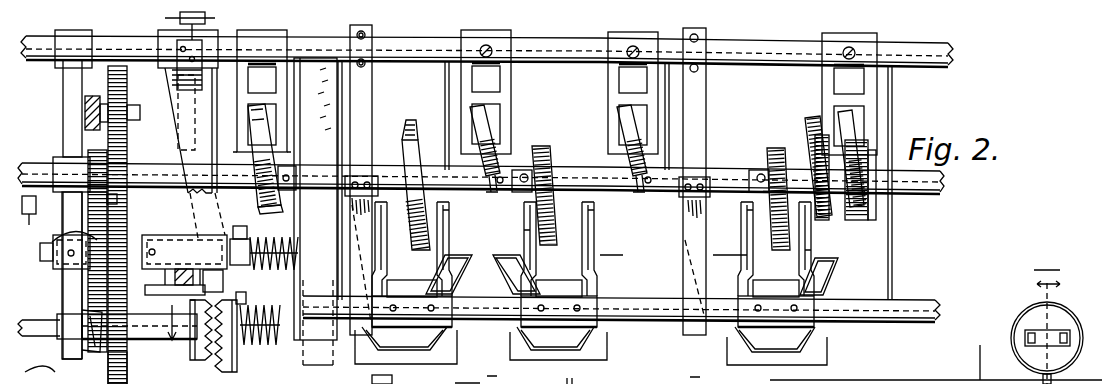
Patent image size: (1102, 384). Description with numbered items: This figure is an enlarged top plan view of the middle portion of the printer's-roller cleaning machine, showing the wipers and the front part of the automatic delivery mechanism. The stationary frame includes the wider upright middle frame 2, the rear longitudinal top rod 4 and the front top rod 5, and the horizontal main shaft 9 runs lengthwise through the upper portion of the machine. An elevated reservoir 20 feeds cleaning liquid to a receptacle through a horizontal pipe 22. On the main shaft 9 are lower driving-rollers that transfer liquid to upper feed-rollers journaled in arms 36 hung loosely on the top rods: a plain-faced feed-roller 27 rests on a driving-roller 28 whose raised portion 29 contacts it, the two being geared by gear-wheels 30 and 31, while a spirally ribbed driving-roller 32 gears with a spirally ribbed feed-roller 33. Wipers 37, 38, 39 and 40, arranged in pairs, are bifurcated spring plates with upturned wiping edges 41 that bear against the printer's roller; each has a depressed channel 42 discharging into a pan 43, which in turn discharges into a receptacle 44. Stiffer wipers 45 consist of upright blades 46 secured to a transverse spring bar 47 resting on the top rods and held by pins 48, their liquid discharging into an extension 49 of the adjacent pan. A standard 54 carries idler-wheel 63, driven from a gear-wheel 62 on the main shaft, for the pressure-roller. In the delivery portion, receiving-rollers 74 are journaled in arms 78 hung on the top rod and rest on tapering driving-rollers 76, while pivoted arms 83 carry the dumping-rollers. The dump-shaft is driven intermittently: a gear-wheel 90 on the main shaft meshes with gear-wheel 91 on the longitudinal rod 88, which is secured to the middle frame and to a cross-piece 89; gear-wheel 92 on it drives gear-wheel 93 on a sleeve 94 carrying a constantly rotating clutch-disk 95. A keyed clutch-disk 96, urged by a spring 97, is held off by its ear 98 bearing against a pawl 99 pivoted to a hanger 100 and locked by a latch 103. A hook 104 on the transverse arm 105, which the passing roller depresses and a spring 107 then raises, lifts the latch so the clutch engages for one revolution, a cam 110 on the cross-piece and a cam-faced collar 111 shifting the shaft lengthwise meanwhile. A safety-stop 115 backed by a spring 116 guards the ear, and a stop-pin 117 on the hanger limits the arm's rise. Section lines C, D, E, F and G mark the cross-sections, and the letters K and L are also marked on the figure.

The middle frame 2 is at (315, 211).
The top rod 4 is at (494, 51).
The top rod 5 is at (628, 309).
The main shaft 9 is at (473, 178).
The reservoir 20 is at (1056, 306).
The horizontal pipe 22 is at (1052, 380).
The feed-roller 27 is at (850, 114).
The driving-roller 28 is at (872, 202).
The raised portion 29 is at (855, 222).
The gear-wheel 30 is at (822, 221).
The gear-wheel 31 is at (818, 122).
The driving-roller 32 is at (552, 146).
The feed-roller 33 is at (547, 182).
The arms 36 is at (608, 79).
The wiper 37 is at (30, 328).
The wiper 38 is at (769, 264).
The wiper 39 is at (567, 264).
The wiper 40 is at (449, 236).
The wiping edges 41 is at (449, 208).
The depressed channel 42 is at (530, 226).
The pan 43 is at (643, 275).
The receptacle 44 is at (457, 337).
The wipers 45 is at (374, 124).
The upright blades 46 is at (718, 154).
The spring bar 47 is at (373, 88).
The pins 48 is at (366, 61).
The extension 49 is at (374, 172).
The standard 54 is at (85, 100).
The gear-wheel 62 is at (118, 200).
The idler-wheel 63 is at (128, 145).
The receiving-rollers 74 is at (253, 108).
The driving-rollers 76 is at (276, 213).
The arms 78 is at (280, 108).
The arms 83 is at (22, 212).
The longitudinal rod 88 is at (40, 253).
The cross-piece 89 is at (63, 289).
The gear-wheel 90 is at (88, 173).
The gear-wheel 91 is at (62, 235).
The gear-wheel 92 is at (108, 222).
The gear-wheel 93 is at (127, 362).
The sleeve 94 is at (139, 326).
The clutch-disk 95 is at (192, 356).
The clutch-disk 96 is at (229, 342).
The spring 97 is at (260, 339).
The ear 98 is at (249, 300).
The pawl 99 is at (213, 281).
The hanger 100 is at (184, 252).
The latch 103 is at (192, 272).
The hook 104 is at (172, 316).
The transverse arm 105 is at (191, 130).
The spring 107 is at (187, 60).
The cam 110 is at (83, 329).
The cam-faced collar 111 is at (86, 352).
The safety-stop 115 is at (220, 229).
The spring 116 is at (274, 243).
The stop-pin 117 is at (165, 279).
The section line C C is at (981, 354).
The section line D D is at (756, 376).
The section line E E is at (597, 376).
The section line F F is at (631, 367).
The section line G G is at (375, 375).
The section line K is at (40, 364).
The section line L is at (1044, 262).